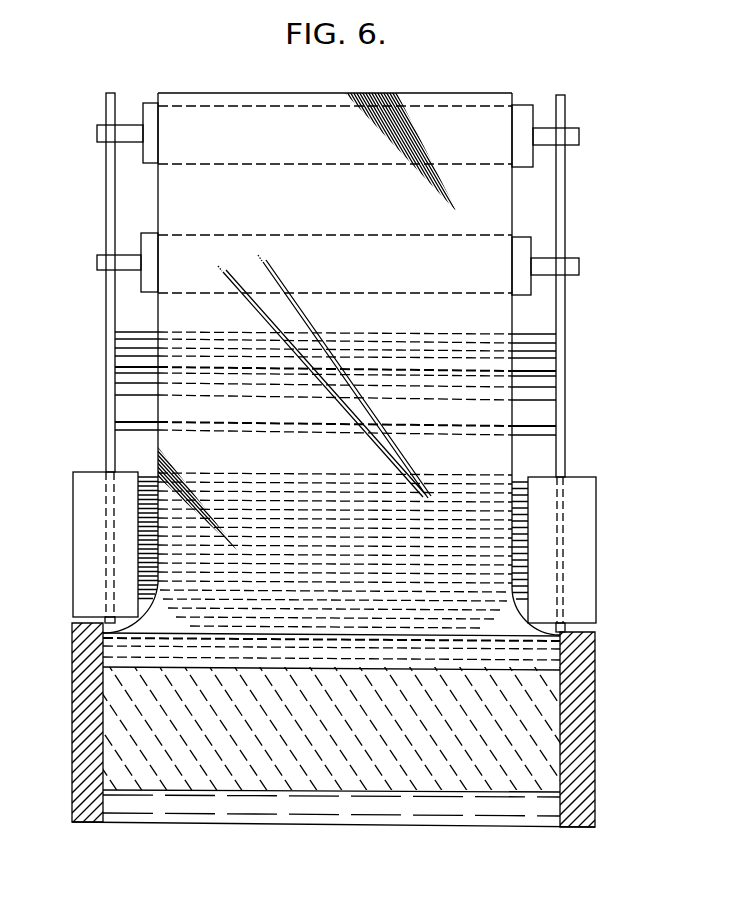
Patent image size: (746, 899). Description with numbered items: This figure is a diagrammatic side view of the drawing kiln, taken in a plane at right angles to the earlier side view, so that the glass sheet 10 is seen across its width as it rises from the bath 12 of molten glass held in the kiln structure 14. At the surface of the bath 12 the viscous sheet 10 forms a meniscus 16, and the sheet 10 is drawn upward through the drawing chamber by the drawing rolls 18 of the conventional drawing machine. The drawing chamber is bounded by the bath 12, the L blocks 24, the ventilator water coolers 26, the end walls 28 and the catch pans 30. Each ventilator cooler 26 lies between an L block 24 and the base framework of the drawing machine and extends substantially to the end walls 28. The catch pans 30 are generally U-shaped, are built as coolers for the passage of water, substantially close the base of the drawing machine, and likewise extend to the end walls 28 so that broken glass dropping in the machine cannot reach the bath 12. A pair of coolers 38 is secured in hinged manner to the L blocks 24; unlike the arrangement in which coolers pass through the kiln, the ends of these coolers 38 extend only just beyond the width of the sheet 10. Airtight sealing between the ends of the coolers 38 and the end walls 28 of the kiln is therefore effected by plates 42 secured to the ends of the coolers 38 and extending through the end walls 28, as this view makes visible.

The sheet of glass 10 is at (232, 112).
The bath of molten glass 12 is at (548, 655).
The base block 14 is at (537, 703).
The meniscus 16 is at (102, 624).
The drawing rolls 18 is at (150, 108).
The L blocks 24 is at (124, 457).
The ventilator water coolers 26 is at (122, 378).
The end walls 28 is at (108, 405).
The catch pans 30 is at (122, 360).
The coolers 38 is at (145, 540).
The plates 42 is at (83, 543).